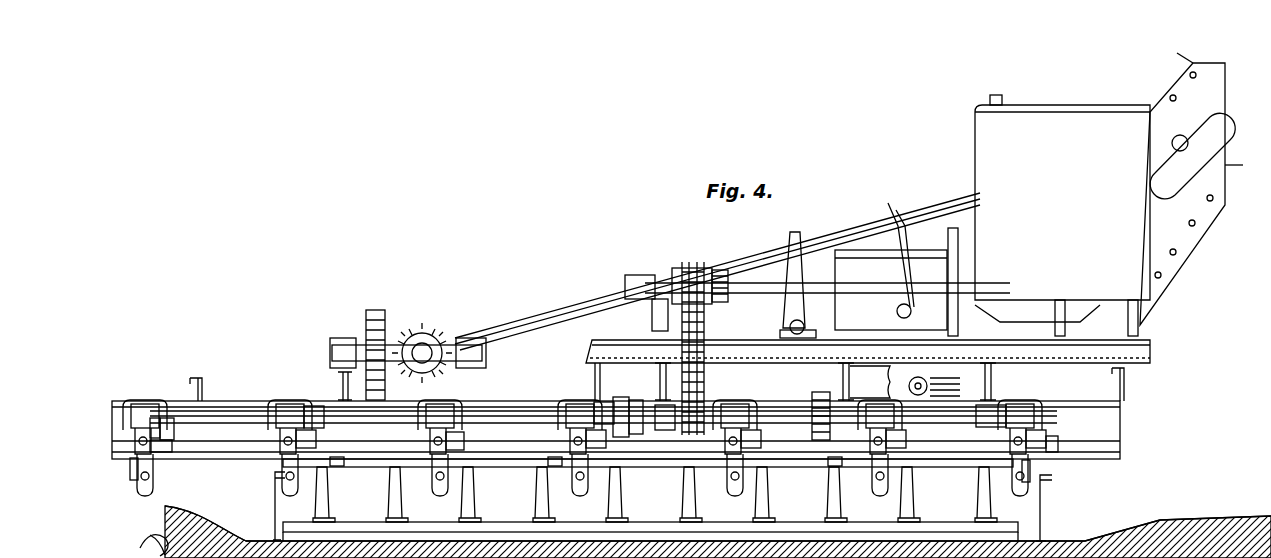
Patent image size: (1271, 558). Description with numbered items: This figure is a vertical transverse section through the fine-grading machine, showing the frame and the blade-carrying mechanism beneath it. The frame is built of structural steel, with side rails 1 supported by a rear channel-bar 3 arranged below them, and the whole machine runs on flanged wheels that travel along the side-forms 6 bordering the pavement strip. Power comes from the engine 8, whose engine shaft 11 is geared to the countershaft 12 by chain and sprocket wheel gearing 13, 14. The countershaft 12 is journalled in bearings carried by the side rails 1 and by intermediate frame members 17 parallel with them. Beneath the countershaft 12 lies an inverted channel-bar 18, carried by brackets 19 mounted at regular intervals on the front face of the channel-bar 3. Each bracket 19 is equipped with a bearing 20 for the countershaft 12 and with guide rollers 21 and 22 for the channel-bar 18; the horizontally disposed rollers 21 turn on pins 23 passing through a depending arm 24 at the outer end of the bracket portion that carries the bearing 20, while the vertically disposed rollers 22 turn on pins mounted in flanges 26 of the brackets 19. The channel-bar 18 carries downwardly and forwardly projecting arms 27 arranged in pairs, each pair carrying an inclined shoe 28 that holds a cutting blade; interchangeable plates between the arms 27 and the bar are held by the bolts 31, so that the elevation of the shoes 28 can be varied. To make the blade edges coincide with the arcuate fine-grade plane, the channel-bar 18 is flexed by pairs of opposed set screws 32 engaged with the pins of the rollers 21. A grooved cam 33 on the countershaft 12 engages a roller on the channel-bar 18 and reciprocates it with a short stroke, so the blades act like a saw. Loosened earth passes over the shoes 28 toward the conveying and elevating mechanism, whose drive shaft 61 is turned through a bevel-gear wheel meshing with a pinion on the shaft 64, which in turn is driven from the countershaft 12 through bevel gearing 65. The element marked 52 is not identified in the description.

The side rails 1 is at (204, 386).
The rear channel-bar 3 is at (243, 401).
The side-forms 6 is at (274, 504).
The engine 8 is at (975, 178).
The engine shaft 11 is at (762, 293).
The countershaft 12 is at (528, 410).
The sprocket wheel 13 is at (773, 403).
The chain 14 is at (680, 275).
The intermediate frame members 17 is at (338, 380).
The inverted channel-bar 18 is at (232, 459).
The brackets 19 is at (158, 435).
The bearing 20 is at (290, 404).
The guide rollers 21 is at (570, 438).
The guide rollers 22 is at (168, 462).
The pins 23 is at (143, 432).
The depending arm 24 is at (133, 480).
The flanges 26 is at (172, 444).
The arms 27 is at (328, 494).
The shoe 28 is at (360, 530).
The bolts 31 is at (338, 466).
The set screws 32 is at (437, 470).
The cam 33 is at (643, 403).
The bearing block 52 is at (588, 404).
The drive shaft 61 is at (1191, 189).
The shaft 64 is at (936, 212).
The bevel gearing 65 is at (432, 330).